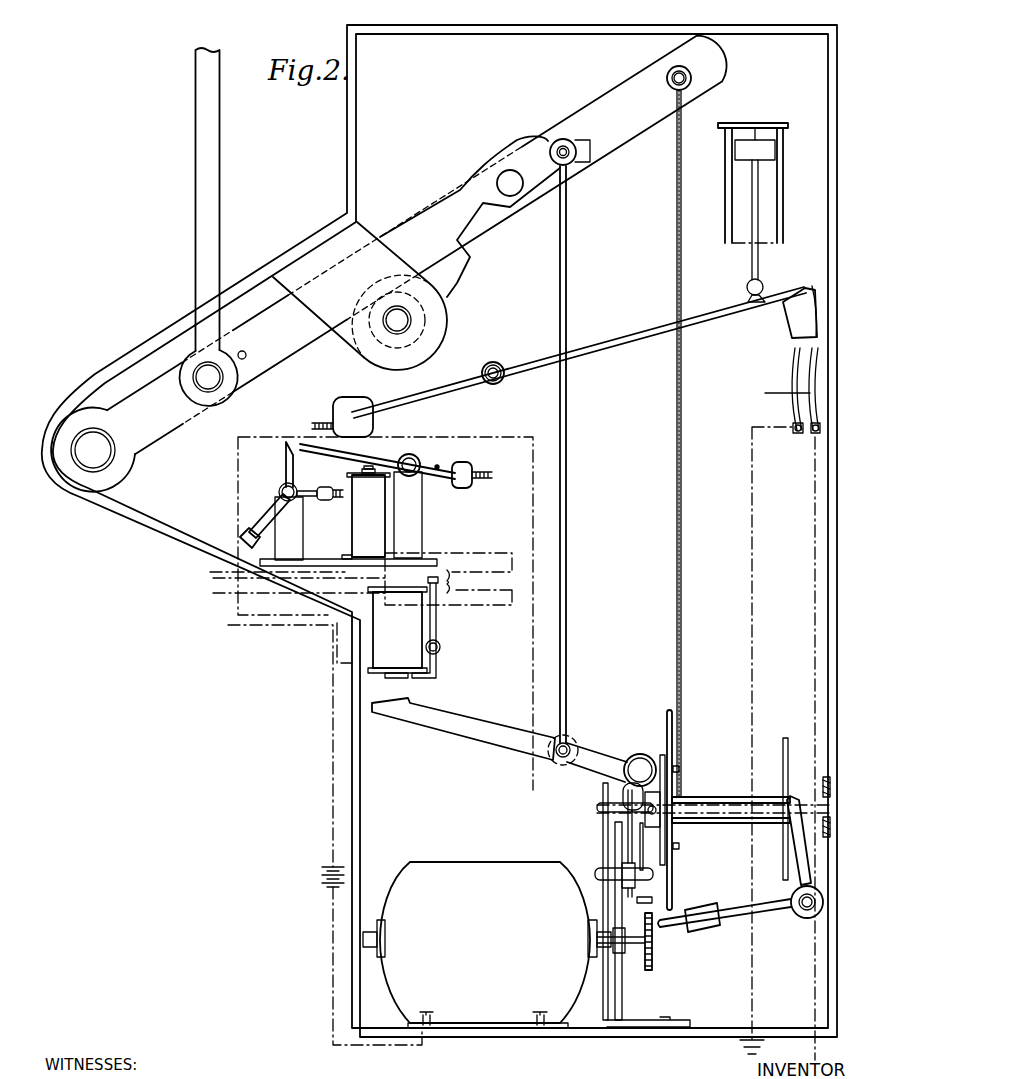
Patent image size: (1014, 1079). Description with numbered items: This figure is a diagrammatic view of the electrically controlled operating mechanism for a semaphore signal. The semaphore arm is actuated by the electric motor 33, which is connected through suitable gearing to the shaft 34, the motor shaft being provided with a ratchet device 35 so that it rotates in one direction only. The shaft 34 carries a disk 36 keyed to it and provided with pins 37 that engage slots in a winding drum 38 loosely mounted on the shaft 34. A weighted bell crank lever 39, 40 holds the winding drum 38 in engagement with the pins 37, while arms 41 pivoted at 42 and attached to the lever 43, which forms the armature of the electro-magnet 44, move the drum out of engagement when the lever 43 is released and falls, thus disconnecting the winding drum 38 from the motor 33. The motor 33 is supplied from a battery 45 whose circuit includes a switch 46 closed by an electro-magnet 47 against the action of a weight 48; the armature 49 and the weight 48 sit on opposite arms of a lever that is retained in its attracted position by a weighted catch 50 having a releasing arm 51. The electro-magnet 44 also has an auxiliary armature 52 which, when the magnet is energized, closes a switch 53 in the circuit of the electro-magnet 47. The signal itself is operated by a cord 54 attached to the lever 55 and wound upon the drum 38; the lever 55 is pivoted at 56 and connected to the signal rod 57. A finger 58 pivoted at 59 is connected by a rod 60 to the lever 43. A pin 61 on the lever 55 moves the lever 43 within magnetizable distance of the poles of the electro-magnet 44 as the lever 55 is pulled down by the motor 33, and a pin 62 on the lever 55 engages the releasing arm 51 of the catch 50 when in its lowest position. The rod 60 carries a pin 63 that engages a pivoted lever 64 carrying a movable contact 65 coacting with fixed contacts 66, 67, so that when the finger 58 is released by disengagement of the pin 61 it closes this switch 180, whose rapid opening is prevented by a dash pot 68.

The electric motor 33 is at (487, 945).
The shaft 34 is at (815, 803).
The ratchet device 35 is at (653, 955).
The disk 36 is at (662, 757).
The pins 37 is at (680, 768).
The winding drum 38 is at (667, 716).
The weighted bell crank lever 39 is at (813, 856).
The weighted bell crank lever 40 is at (775, 910).
The arms 41 is at (616, 774).
The pivot 42 is at (637, 755).
The lever 43 is at (458, 718).
The electro-magnet 44 is at (397, 632).
The battery 45 is at (336, 862).
The switch 46 is at (447, 450).
The electro-magnet 47 is at (366, 512).
The weight 48 is at (463, 488).
The armature 49 is at (377, 500).
The weighted catch 50 is at (287, 470).
The releasing arm 51 is at (272, 516).
The auxiliary armature 52 is at (437, 670).
The switch 53 is at (445, 624).
The cord 54 is at (682, 455).
The lever 55 is at (653, 78).
The pivot 56 is at (93, 450).
The signal rod 57 is at (196, 191).
The finger 58 is at (473, 176).
The pivot 59 is at (393, 327).
The rod 60 is at (568, 279).
The pin 61 is at (523, 183).
The pin 62 is at (224, 372).
The pin 63 is at (506, 367).
The pivoted lever 64 is at (668, 336).
The movable contact 65 is at (788, 314).
The fixed contact 66 is at (795, 357).
The fixed contact 67 is at (813, 284).
The dash pot 68 is at (763, 212).
The switch 180 is at (769, 395).